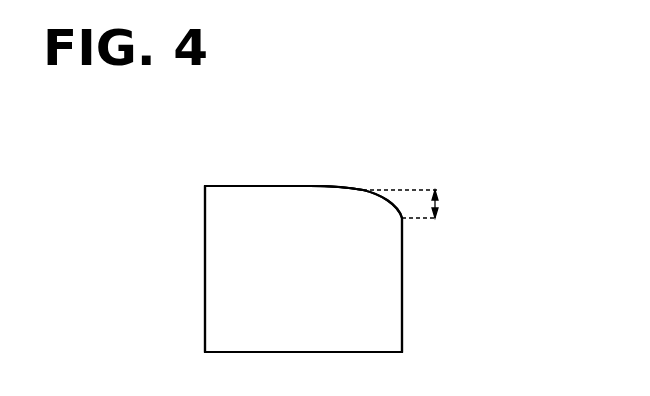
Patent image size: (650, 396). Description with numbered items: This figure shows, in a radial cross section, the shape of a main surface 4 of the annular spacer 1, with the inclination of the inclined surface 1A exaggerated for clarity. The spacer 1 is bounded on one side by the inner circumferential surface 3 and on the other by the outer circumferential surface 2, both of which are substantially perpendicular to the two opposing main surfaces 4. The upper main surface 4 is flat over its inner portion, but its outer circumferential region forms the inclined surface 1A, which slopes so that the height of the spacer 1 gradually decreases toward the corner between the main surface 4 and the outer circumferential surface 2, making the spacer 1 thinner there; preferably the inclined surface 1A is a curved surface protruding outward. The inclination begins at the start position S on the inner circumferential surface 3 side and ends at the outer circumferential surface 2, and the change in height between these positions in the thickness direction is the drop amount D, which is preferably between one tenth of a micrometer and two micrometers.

The spacer 1 is at (264, 154).
The inclined surface 1A is at (365, 190).
The outer circumferential surface 2 is at (402, 264).
The inner circumferential surface 3 is at (205, 272).
The main surface 4 is at (277, 186).
The start position S is at (329, 188).
The drop amount D is at (413, 202).